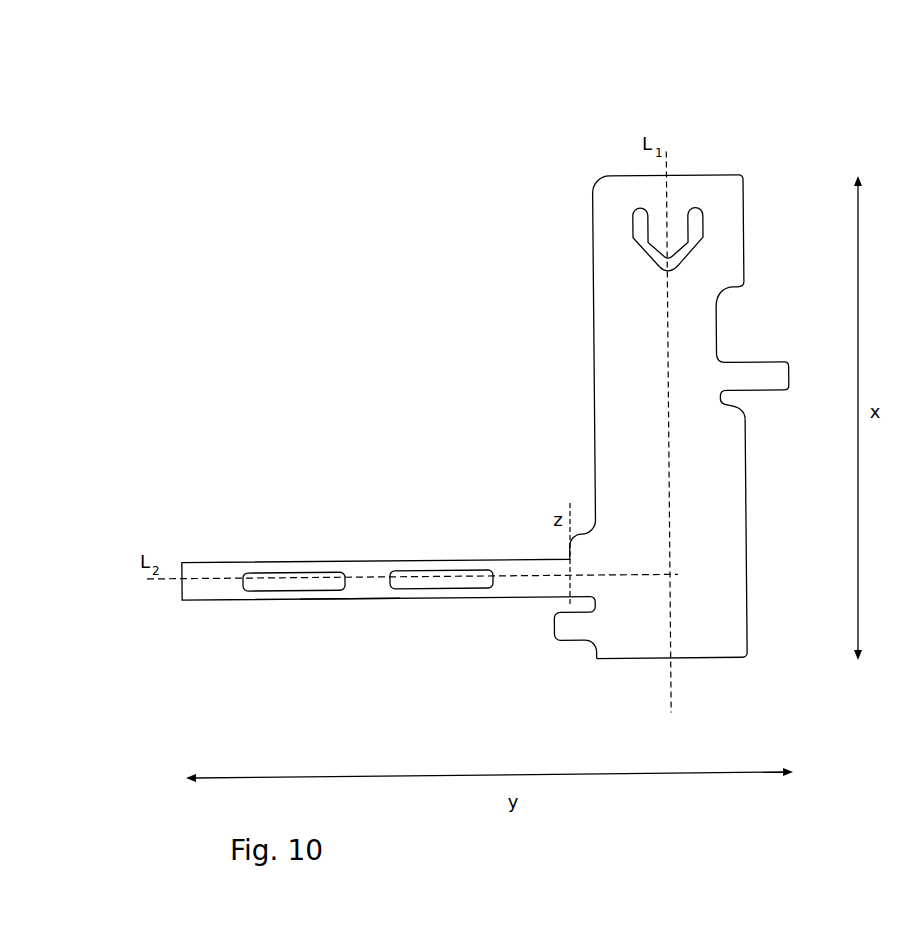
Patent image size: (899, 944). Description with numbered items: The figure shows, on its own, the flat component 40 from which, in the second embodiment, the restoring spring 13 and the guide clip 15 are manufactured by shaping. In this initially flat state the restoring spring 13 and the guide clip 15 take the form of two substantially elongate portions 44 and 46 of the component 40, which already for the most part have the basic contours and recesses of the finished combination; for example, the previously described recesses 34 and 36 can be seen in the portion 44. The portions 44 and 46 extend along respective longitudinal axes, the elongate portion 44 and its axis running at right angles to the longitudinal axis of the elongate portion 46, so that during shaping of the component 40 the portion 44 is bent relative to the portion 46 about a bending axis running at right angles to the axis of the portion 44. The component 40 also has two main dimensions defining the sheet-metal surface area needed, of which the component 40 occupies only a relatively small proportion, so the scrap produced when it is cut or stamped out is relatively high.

The flat component 40 is at (774, 86).
The guide clip 15 is at (766, 226).
The elongate portion 46 is at (703, 343).
The restoring spring 13 is at (215, 621).
The recess 36 is at (290, 590).
The elongate portion 44 is at (356, 599).
The recess 34 is at (440, 588).